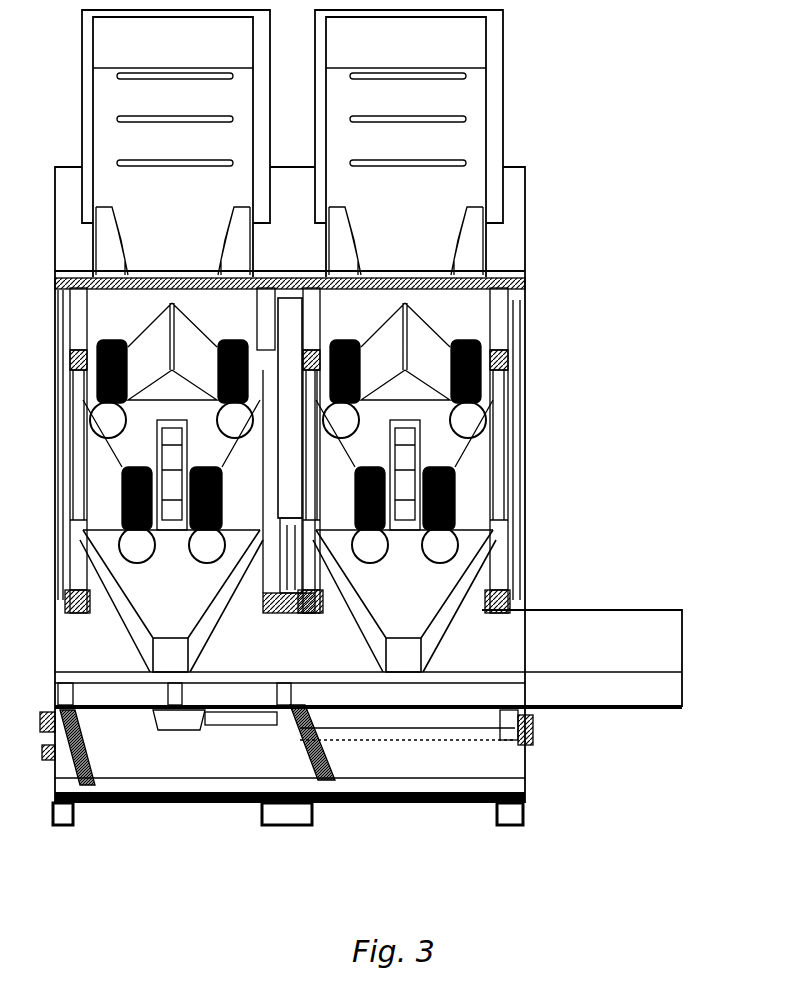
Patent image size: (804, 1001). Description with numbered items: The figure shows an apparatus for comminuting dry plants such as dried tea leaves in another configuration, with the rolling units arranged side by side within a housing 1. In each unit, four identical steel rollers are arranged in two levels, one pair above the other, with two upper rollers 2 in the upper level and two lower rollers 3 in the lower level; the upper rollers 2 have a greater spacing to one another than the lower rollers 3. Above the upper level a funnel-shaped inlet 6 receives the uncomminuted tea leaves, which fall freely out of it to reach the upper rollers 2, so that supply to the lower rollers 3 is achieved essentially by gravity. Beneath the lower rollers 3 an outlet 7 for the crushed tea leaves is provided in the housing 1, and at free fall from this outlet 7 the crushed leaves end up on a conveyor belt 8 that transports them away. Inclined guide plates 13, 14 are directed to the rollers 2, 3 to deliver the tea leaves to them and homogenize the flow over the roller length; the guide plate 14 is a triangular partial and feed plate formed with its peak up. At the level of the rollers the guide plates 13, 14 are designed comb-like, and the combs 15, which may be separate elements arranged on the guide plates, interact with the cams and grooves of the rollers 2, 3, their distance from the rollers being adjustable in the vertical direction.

The housing 1 is at (525, 242).
The upper rollers 2 is at (126, 432).
The lower rollers 3 is at (194, 565).
The funnel-shaped inlet 6 is at (428, 218).
The outlet 7 is at (406, 601).
The conveyor belt 8 is at (622, 710).
The guide plate 13 is at (422, 351).
The guide plate 14 is at (429, 475).
The comb 15 is at (471, 497).